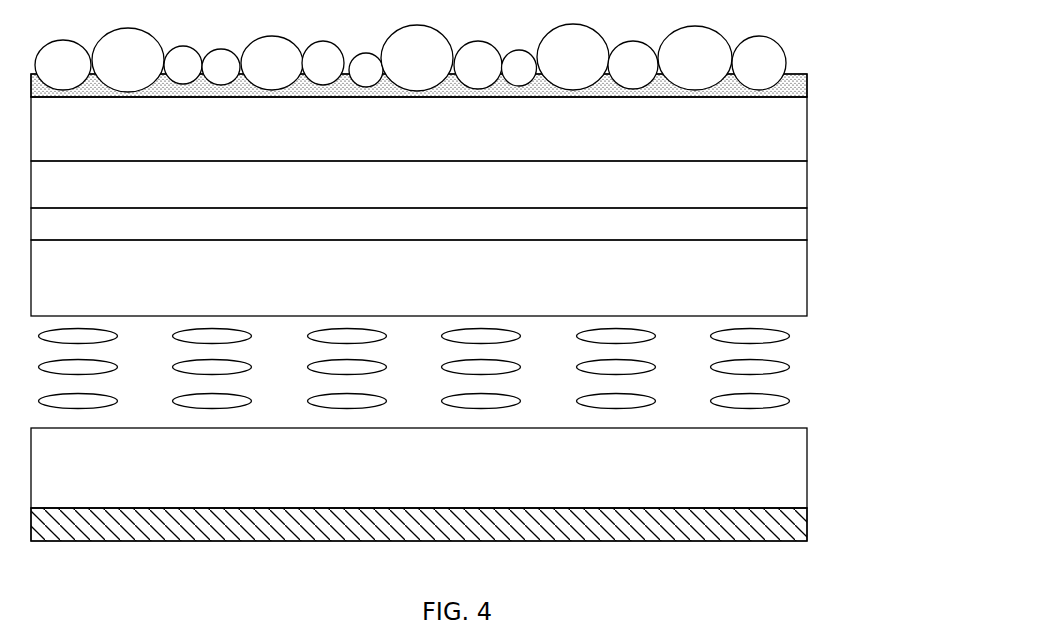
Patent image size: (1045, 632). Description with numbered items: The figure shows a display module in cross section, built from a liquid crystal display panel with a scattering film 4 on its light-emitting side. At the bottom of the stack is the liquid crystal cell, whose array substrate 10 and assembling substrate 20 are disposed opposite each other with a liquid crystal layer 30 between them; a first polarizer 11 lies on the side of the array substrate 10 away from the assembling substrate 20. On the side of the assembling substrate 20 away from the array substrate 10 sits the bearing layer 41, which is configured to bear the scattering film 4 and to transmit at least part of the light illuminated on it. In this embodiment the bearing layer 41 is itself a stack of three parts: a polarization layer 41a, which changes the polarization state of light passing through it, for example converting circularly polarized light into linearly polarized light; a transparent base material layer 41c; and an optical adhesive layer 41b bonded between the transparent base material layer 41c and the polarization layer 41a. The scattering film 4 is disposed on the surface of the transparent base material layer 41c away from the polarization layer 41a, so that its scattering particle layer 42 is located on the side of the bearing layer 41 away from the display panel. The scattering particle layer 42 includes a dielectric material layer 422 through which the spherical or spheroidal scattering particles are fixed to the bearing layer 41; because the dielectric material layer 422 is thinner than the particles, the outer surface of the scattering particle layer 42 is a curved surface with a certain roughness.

The scattering film 4 is at (489, 52).
The scattering particle layer 42 is at (489, 52).
The dielectric material layer 422 is at (768, 47).
The bearing layer 41 is at (484, 168).
The polarization layer 41a is at (453, 222).
The optical adhesive layer 41b is at (798, 196).
The transparent base material layer 41c is at (807, 146).
The assembling substrate 20 is at (800, 294).
The liquid crystal layer 30 is at (805, 388).
The array substrate 10 is at (803, 485).
The first polarizer 11 is at (805, 527).